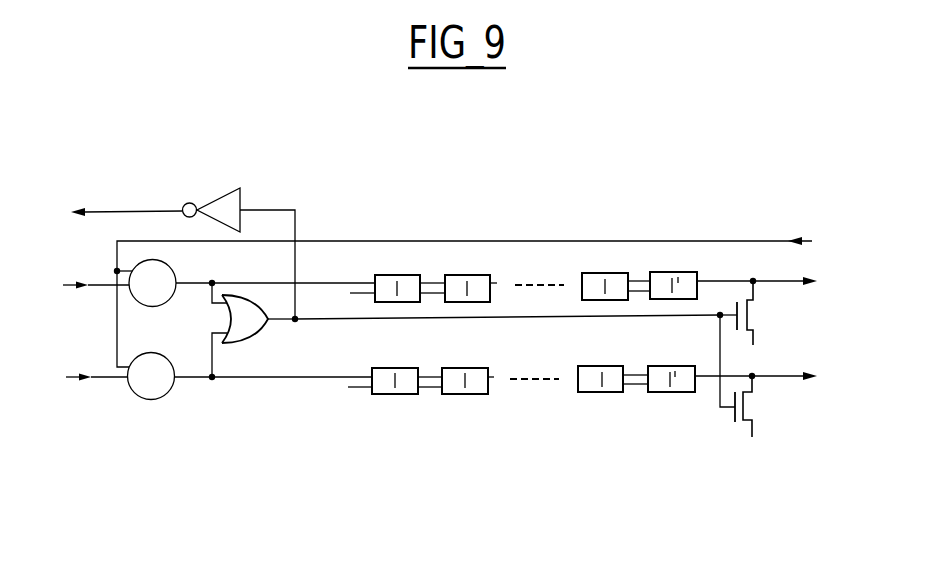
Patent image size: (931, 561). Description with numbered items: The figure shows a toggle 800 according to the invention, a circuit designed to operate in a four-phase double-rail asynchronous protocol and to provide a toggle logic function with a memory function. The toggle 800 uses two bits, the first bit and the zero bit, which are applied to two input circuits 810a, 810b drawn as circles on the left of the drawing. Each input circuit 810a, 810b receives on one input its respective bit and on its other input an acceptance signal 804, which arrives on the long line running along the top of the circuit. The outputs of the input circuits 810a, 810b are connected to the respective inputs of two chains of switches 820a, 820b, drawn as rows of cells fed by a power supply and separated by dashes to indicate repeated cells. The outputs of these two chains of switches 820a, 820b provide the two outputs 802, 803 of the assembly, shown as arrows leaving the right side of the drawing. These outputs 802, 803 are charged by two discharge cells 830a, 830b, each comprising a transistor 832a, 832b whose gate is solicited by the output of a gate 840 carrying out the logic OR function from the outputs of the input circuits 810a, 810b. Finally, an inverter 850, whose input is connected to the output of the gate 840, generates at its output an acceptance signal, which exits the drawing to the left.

The toggle 800 is at (261, 458).
The output 802 is at (783, 280).
The output 803 is at (785, 374).
The acceptance signal 804 is at (491, 297).
The input circuit 810a is at (150, 295).
The input circuit 810b is at (150, 386).
The chain of switches 820a is at (470, 256).
The chain of switches 820b is at (470, 413).
The discharge cell 830a is at (702, 333).
The discharge cell 830b is at (722, 432).
The transistor 832a is at (779, 313).
The transistor 832b is at (778, 406).
The gate 840 is at (243, 330).
The inverter 850 is at (183, 240).